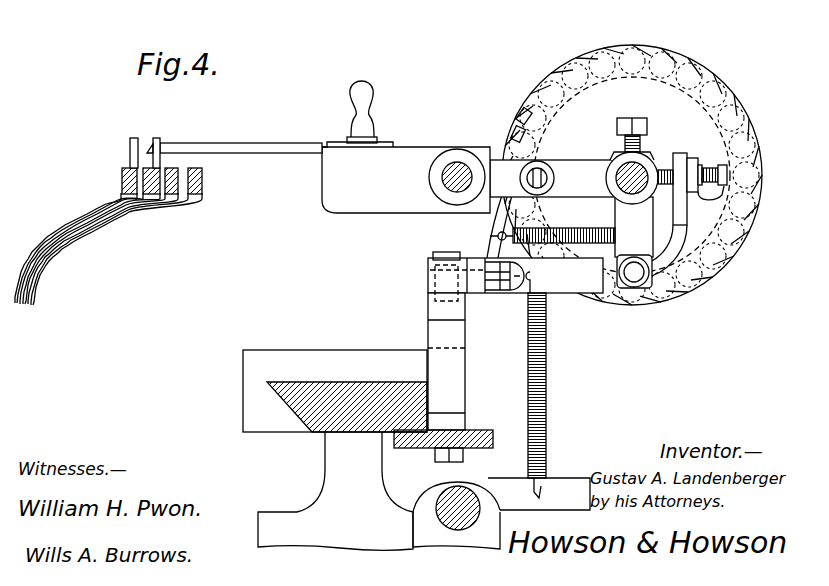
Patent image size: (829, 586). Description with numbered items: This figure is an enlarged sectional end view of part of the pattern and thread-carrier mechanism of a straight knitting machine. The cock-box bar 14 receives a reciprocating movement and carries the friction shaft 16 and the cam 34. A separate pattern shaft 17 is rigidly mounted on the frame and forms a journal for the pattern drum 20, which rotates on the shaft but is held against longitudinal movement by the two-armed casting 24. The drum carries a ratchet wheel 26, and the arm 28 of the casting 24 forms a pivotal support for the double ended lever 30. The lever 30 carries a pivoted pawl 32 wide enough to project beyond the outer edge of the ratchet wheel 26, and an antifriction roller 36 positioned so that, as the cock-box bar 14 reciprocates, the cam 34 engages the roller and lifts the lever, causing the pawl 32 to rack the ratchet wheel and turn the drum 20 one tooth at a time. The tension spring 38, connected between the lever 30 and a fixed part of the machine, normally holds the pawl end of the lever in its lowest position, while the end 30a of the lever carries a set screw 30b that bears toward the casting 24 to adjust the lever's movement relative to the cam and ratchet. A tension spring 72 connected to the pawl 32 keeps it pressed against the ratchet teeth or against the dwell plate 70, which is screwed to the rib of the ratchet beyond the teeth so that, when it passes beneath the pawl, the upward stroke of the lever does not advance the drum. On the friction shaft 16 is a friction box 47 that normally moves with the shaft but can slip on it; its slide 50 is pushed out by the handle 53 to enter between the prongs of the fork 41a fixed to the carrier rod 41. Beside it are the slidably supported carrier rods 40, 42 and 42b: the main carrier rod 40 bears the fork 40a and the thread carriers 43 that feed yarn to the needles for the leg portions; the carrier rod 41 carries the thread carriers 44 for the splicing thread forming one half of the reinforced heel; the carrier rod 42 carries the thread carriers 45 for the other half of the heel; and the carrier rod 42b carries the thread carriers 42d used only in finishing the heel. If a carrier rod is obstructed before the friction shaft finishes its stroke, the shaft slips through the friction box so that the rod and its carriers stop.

The cock-box bar 14 is at (484, 431).
The friction shaft 16 is at (443, 175).
The pattern shaft 17 is at (638, 168).
The pattern drum 20 is at (683, 62).
The two-armed casting 24 is at (561, 178).
The ratchet wheel 26 is at (758, 140).
The arm 28 is at (641, 222).
The double ended lever 30 is at (708, 280).
The end of lever 30a is at (698, 157).
The set screw 30b is at (757, 197).
The pawl 32 is at (488, 248).
The cam 34 is at (459, 310).
The antifriction roller 36 is at (432, 252).
The tension spring 38 is at (547, 355).
The carrier rod 40 is at (121, 182).
The fork 40a is at (134, 138).
The carrier rod 41 is at (148, 200).
The fork 41a is at (162, 142).
The carrier rod 42 is at (183, 200).
The carrier rod 42b is at (197, 196).
The thread carriers 42d is at (56, 257).
The thread carriers 43 is at (97, 218).
The thread carriers 44 is at (80, 228).
The thread carriers 45 is at (113, 228).
The friction box 47 is at (345, 192).
The slide 50 is at (244, 146).
The handle 53 is at (356, 104).
The dwell plate 70 is at (518, 116).
The tension spring 72 is at (583, 228).